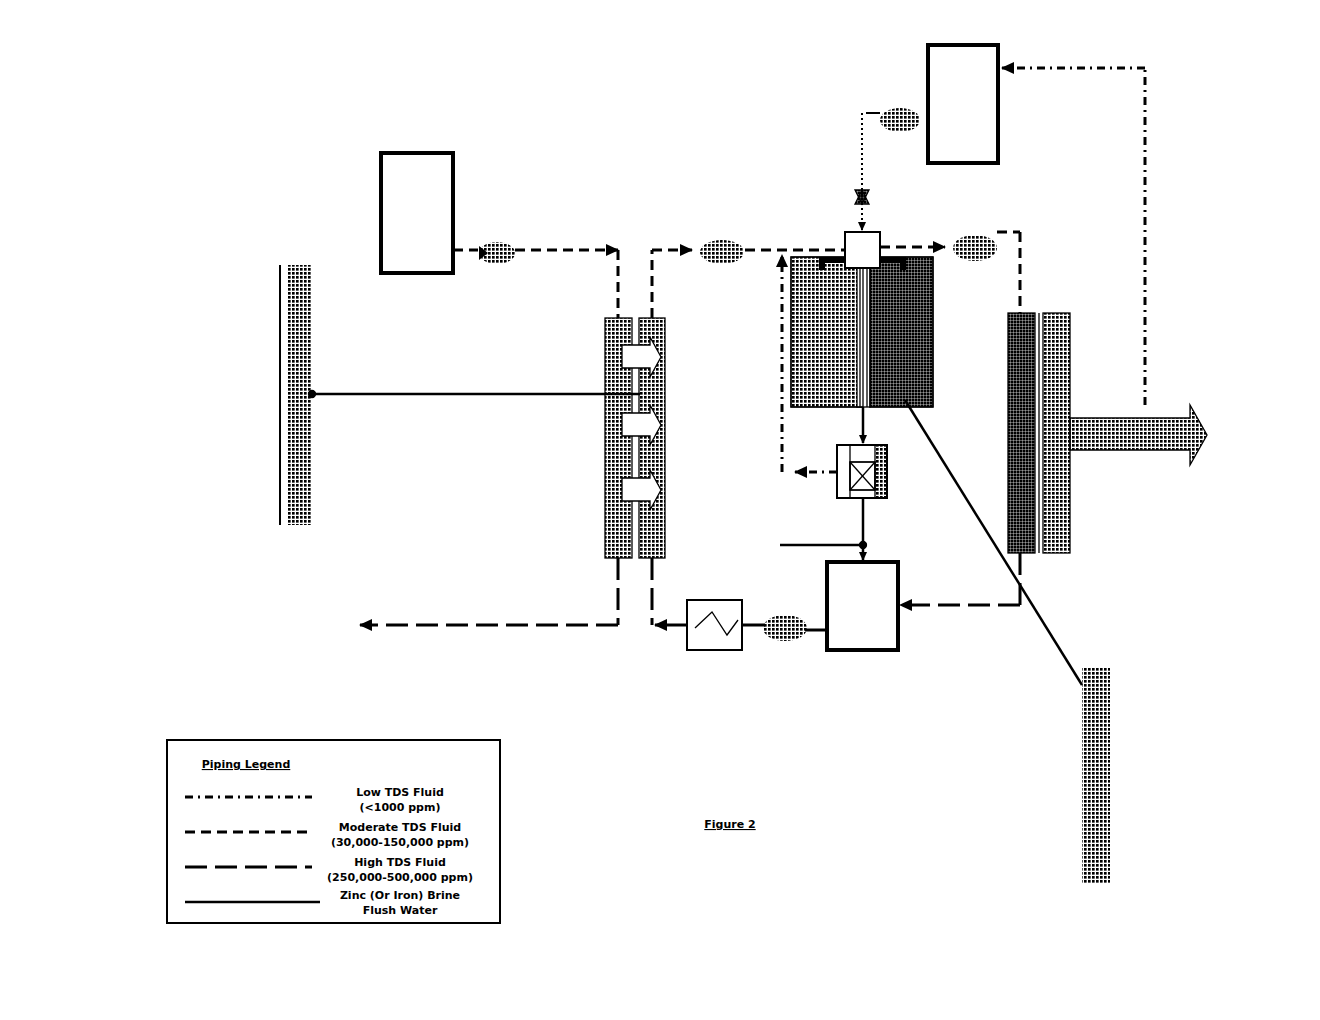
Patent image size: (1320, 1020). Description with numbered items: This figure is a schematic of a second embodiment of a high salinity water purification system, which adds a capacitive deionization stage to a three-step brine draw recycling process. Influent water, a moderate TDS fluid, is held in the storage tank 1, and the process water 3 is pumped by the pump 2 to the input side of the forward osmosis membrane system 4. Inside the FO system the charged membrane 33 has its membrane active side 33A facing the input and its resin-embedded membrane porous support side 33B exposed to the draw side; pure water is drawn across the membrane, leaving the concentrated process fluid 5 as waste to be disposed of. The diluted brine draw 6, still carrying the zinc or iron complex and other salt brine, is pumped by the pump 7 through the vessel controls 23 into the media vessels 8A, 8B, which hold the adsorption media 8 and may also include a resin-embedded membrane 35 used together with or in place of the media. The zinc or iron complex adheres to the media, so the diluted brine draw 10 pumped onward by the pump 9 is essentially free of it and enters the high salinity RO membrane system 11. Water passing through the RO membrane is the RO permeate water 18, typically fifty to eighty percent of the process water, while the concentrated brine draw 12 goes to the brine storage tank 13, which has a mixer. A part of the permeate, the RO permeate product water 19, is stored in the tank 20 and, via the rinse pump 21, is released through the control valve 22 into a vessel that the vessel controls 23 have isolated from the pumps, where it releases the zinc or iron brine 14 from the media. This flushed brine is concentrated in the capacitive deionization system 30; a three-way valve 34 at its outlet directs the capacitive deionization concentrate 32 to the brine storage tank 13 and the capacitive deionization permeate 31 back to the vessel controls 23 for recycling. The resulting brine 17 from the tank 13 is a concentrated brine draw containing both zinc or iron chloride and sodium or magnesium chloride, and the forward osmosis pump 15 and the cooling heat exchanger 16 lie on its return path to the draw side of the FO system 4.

The storage tank 1 is at (417, 213).
The pump 2 is at (497, 268).
The process water 3 is at (535, 269).
The forward osmosis membrane system 4 is at (618, 457).
The concentrated process fluid 5 is at (489, 601).
The diluted brine draw 6 is at (652, 250).
The pump 7 is at (772, 242).
The adsorption media 8 is at (945, 298).
The media vessel 8A is at (806, 287).
The media vessel 8B is at (915, 283).
The pump 9 is at (945, 234).
The diluted brine draw with no zinc or iron complex 10 is at (1020, 232).
The high salinity RO membrane system 11 is at (1022, 558).
The concentrated brine draw 12 is at (945, 605).
The brine storage tank 13 is at (862, 606).
The zinc (or iron) chloride brine from brine flush 14 is at (905, 400).
The forward osmosis pump 15 is at (784, 641).
The cooling heat exchanger 16 is at (705, 640).
The concentrated brine draw 17 is at (652, 598).
The RO permeate water 18 is at (1186, 476).
The RO permeate product water for adsorption rinse 19 is at (1145, 125).
The water storage tank 20 is at (963, 104).
The pump 21 is at (893, 161).
The control valve 22 is at (868, 200).
The vessel controls 23 is at (845, 236).
The capacitive deionization system 30 is at (840, 482).
The capacitive deionization permeate 31 is at (782, 408).
The capacitive deionization concentrate 32 is at (777, 566).
The charged membrane 33 is at (280, 409).
The membrane active side 33A is at (272, 487).
The resin-embedded membrane porous support side 33B is at (305, 513).
The 3-way valve 34 is at (868, 480).
The resin-embedded membrane 35 is at (1105, 875).